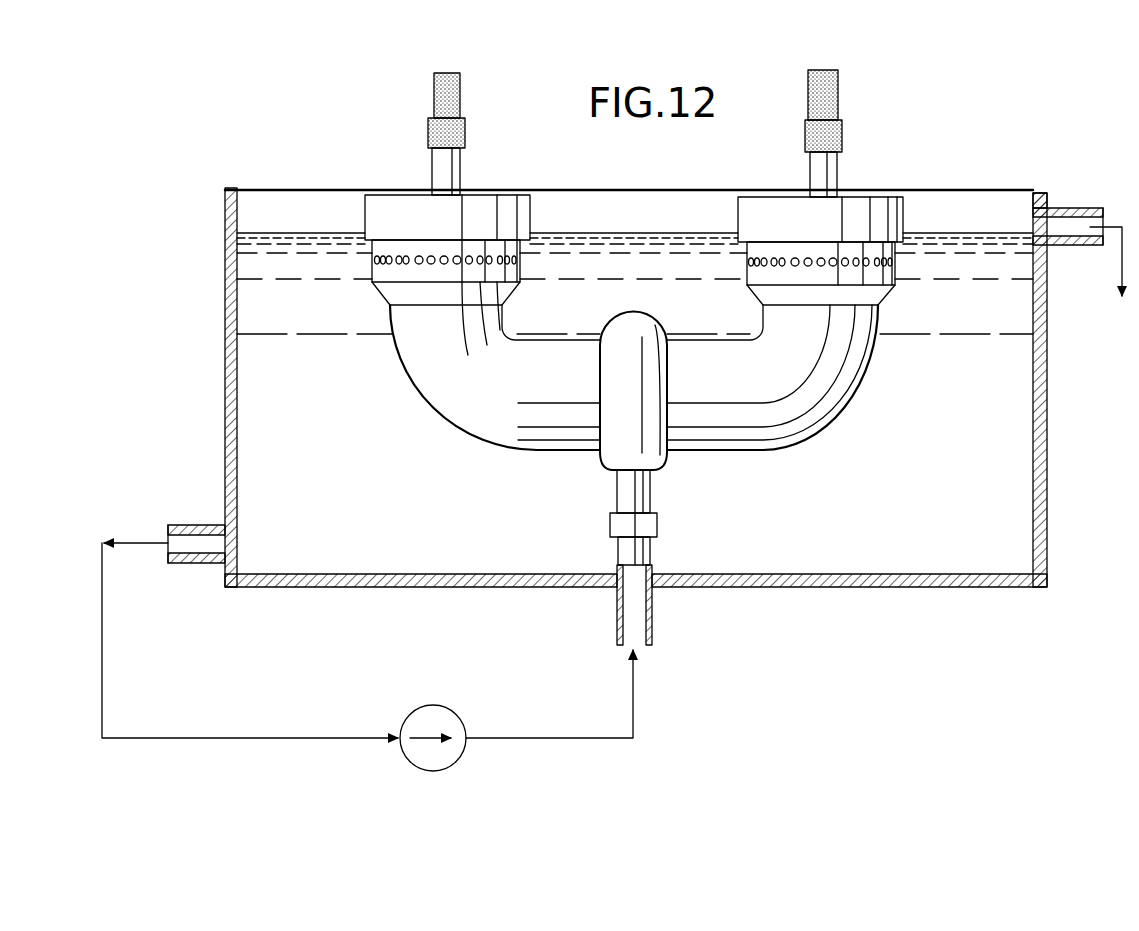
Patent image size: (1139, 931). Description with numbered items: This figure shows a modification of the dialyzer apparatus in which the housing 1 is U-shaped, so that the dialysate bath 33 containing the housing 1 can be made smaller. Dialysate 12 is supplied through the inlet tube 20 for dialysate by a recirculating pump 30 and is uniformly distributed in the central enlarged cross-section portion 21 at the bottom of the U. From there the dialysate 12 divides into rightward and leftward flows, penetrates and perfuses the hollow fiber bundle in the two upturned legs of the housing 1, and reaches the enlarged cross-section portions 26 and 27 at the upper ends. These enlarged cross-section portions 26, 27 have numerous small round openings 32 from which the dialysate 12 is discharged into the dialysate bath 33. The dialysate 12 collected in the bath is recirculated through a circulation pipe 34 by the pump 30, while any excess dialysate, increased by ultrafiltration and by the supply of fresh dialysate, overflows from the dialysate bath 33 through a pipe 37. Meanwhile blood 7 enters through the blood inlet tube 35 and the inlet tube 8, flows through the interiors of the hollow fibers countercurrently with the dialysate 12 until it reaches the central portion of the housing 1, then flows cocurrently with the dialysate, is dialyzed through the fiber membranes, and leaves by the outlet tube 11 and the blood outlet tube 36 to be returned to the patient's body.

The housing 1 is at (698, 337).
The blood 7 is at (447, 38).
The inlet tube 8 is at (448, 176).
The outlet tube 11 is at (820, 175).
The dialysate 12 is at (1005, 360).
The inlet tube for dialysate 20 is at (628, 492).
The central enlarged cross-section portion 21 is at (623, 340).
The enlarged cross-section portion 26 is at (492, 290).
The enlarged cross-section portion 27 is at (873, 282).
The recirculating pump 30 is at (433, 708).
The small round openings 32 is at (400, 263).
The dialysate bath 33 is at (1047, 418).
The circulation pipe 34 is at (103, 625).
The blood inlet tube 35 is at (461, 100).
The blood outlet tube 36 is at (838, 77).
The pipe 37 is at (1058, 209).